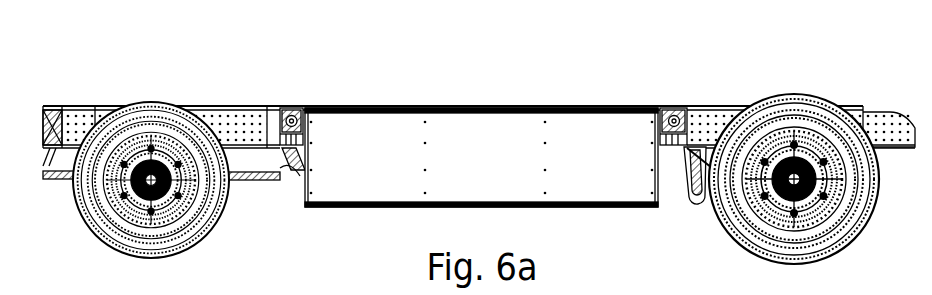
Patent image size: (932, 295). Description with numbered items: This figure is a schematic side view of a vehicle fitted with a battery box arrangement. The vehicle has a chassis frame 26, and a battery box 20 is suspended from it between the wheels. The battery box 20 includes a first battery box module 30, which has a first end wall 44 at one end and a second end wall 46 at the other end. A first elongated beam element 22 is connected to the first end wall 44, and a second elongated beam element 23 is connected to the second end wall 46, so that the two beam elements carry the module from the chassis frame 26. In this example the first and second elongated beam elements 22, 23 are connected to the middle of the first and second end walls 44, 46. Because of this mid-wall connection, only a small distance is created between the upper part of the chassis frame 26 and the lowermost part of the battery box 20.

The battery box 20 is at (390, 205).
The first elongated beam element 22 is at (287, 112).
The second elongated beam element 23 is at (672, 112).
The chassis frame 26 is at (214, 108).
The first battery box module 30 is at (615, 205).
The first end wall 44 is at (303, 180).
The second end wall 46 is at (672, 183).